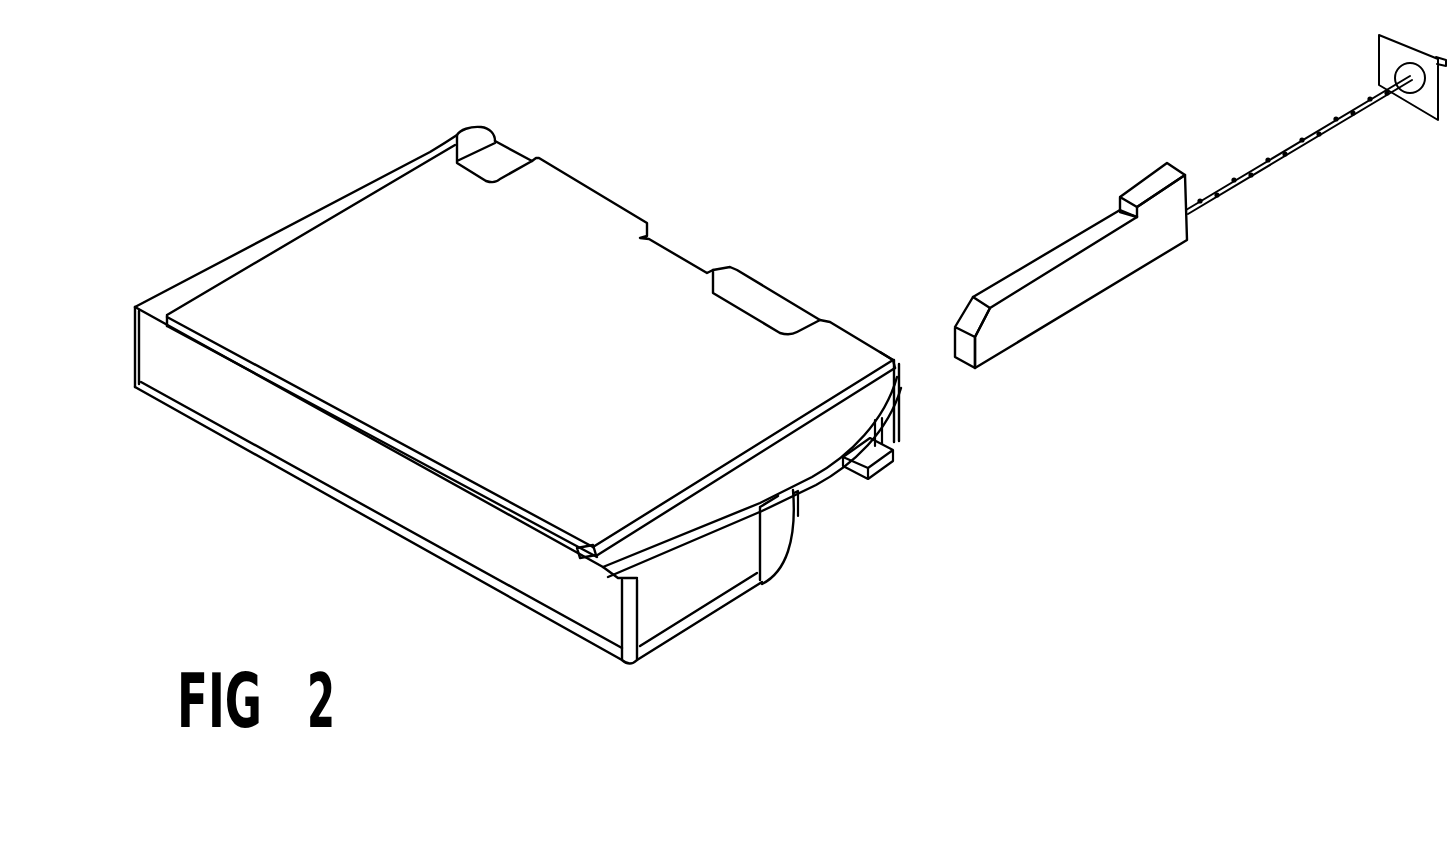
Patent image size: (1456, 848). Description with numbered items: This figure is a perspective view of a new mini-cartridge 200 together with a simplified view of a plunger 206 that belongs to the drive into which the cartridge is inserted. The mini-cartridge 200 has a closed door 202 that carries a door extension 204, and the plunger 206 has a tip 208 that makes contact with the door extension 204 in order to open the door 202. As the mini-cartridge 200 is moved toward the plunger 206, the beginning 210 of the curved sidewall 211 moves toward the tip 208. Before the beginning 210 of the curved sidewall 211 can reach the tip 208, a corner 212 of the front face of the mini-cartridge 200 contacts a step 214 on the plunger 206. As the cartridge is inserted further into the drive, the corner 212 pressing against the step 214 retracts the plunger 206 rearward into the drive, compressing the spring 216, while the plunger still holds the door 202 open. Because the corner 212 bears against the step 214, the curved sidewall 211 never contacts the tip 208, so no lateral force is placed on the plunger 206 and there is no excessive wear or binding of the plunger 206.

The mini-cartridge 200 is at (517, 395).
The door 202 is at (777, 297).
The door extension 204 is at (900, 413).
The plunger 206 is at (1137, 275).
The tip 208 is at (963, 367).
The beginning of the curved sidewall 210 is at (817, 497).
The curved sidewall 211 is at (775, 525).
The corner 212 is at (880, 340).
The step 214 is at (1120, 193).
The spring 216 is at (1323, 140).